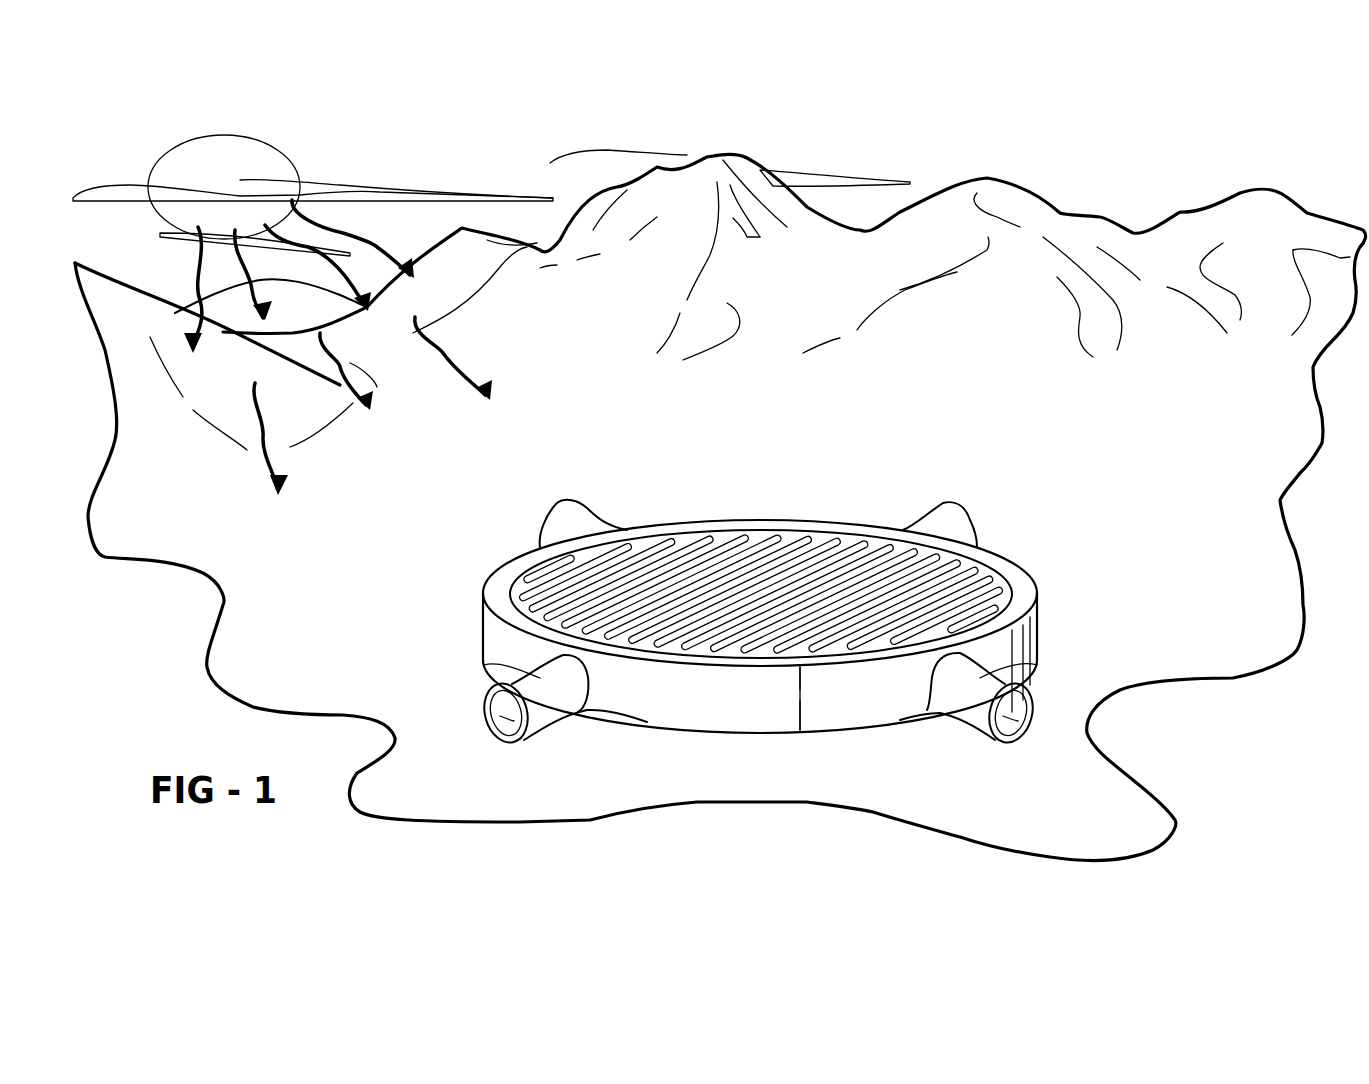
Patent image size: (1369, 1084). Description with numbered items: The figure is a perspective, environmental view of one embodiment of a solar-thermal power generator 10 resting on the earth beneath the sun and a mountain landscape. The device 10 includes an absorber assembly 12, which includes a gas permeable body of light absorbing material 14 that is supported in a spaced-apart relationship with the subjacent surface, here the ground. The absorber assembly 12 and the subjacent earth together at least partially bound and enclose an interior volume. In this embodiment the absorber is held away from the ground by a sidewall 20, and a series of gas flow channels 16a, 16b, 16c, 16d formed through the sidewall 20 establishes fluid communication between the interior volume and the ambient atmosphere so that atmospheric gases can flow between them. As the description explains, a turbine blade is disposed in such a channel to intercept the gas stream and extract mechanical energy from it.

The solar-thermal power generator 10 is at (766, 489).
The absorber assembly 12 is at (1007, 567).
The gas permeable body of light absorbing material 14 is at (865, 568).
The gas flow channel 16a is at (1020, 732).
The gas flow channel 16b is at (962, 523).
The gas flow channel 16c is at (543, 526).
The gas flow channel 16d is at (493, 740).
The sidewall 20 is at (855, 703).